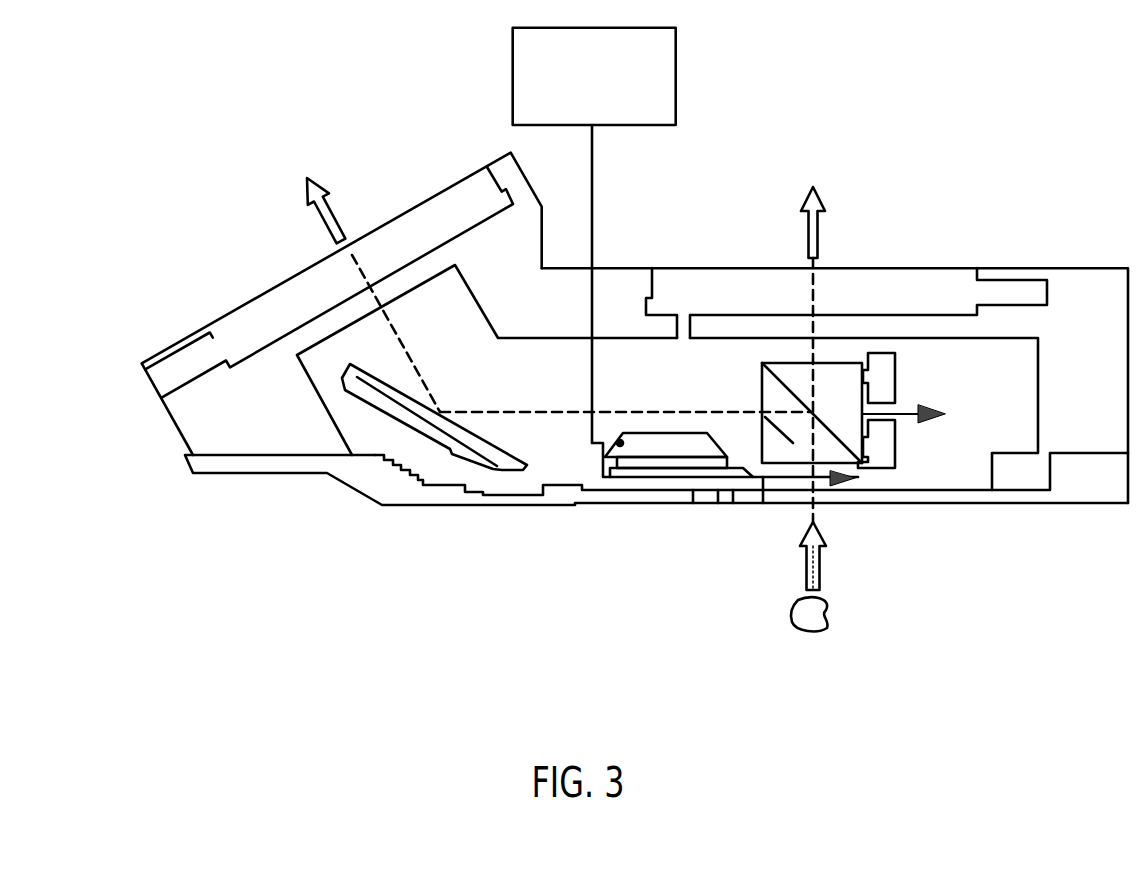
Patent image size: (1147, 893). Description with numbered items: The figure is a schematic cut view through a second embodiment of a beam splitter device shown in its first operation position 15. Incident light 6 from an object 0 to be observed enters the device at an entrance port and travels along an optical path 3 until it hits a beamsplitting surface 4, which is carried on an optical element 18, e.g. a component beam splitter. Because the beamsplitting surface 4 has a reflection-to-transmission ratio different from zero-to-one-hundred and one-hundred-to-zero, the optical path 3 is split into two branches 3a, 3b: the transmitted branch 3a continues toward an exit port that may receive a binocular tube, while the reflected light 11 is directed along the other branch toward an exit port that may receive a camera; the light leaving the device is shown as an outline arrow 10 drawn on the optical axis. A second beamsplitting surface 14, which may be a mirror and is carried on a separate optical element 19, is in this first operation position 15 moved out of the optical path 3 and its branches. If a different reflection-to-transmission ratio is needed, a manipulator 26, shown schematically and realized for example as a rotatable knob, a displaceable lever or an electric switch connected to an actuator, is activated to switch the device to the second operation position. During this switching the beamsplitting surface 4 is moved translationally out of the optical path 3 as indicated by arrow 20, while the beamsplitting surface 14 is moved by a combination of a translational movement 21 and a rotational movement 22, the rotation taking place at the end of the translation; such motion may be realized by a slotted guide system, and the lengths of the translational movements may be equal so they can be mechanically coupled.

The object 0 is at (832, 617).
The optical path 3 is at (818, 507).
The first branch of the optical path 3a is at (813, 280).
The second branch of the optical path 3b is at (352, 272).
The beamsplitting surface 4 is at (838, 445).
The incident light 6 is at (803, 572).
The emitted light 10 is at (821, 240).
The reflected light 11 is at (338, 221).
The second beamsplitting surface 14 is at (740, 480).
The first operation position 15 is at (712, 390).
The optical element 18 is at (843, 352).
The optical element 19 is at (674, 490).
The arrow 20 is at (918, 406).
The translational movement 21 is at (818, 429).
The rotational movement 22 is at (762, 412).
The manipulator 26 is at (564, 94).